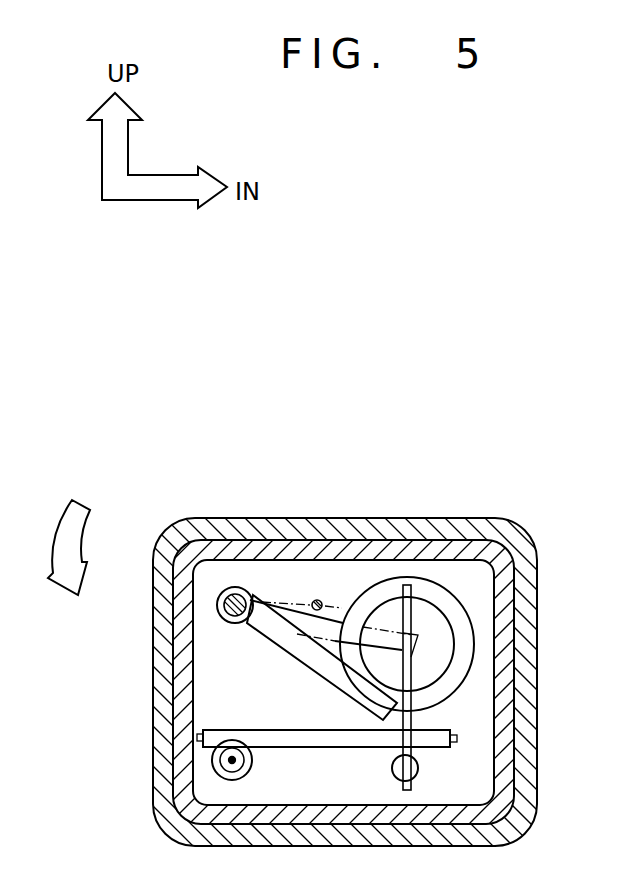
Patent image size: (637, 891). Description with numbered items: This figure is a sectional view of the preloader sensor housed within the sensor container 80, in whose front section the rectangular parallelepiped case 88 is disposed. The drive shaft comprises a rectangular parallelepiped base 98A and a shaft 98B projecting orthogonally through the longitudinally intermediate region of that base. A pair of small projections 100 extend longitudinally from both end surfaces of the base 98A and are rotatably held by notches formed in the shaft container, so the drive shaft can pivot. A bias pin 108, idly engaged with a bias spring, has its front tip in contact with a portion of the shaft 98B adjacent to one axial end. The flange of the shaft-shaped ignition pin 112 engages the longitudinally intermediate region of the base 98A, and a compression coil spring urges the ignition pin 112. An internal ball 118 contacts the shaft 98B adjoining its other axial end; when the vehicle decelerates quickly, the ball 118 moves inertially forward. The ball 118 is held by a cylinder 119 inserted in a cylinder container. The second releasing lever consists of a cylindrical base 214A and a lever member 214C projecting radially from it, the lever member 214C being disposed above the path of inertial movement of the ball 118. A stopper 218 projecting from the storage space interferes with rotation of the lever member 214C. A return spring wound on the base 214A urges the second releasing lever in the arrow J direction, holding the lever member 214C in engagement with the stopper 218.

The sensor container 80 is at (340, 517).
The rectangular parallelepiped case 88 is at (427, 550).
The cylinder 119 is at (528, 571).
The internal ball 118 is at (442, 645).
The small projections 100 is at (457, 740).
The rectangular parallelepiped base 98A is at (313, 748).
The shaft 98B is at (412, 752).
The ignition pin 112 is at (243, 774).
The bias pin 108 is at (396, 774).
The cylindrical base 214A is at (222, 592).
The lever member 214C is at (298, 600).
The stopper 218 is at (320, 600).
The arrow J direction J is at (53, 528).